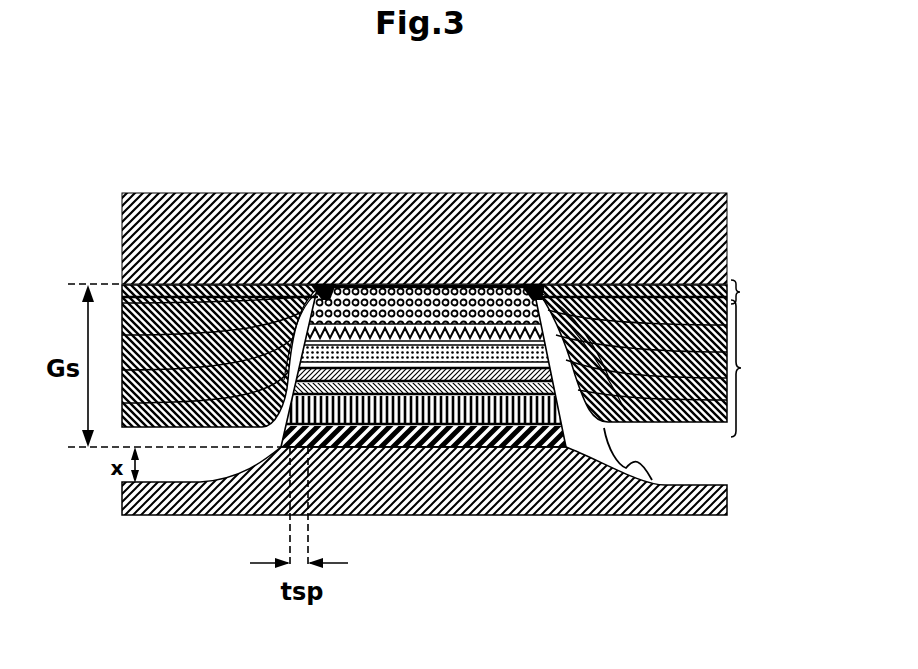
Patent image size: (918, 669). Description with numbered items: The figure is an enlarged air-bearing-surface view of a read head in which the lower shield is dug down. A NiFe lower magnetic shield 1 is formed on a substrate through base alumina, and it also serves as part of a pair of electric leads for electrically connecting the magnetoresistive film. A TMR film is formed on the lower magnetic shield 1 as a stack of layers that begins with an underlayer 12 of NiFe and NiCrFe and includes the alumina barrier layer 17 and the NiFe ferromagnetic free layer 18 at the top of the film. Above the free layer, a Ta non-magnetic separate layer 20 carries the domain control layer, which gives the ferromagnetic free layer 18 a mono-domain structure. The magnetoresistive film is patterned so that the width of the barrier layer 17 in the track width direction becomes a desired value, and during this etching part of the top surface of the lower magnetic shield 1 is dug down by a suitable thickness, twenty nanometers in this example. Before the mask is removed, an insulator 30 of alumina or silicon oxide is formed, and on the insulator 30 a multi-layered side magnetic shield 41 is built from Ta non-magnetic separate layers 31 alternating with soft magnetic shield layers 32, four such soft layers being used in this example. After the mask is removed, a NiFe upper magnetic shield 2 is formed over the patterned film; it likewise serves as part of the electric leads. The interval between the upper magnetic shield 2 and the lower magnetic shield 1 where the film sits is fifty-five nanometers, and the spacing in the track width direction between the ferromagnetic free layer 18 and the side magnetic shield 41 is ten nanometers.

The lower magnetic shield 1 is at (697, 515).
The upper magnetic shield 2 is at (608, 226).
The underlayer 12 is at (591, 452).
The barrier layer 17 is at (355, 362).
The ferromagnetic free layer 18 is at (343, 452).
The non-magnetic separate layer 20 is at (324, 283).
The insulator 30 is at (645, 478).
The non-magnetic separate layer 31 is at (740, 290).
The soft magnetic shield layer 32 is at (740, 330).
The side magnetic shield 41 is at (455, 360).